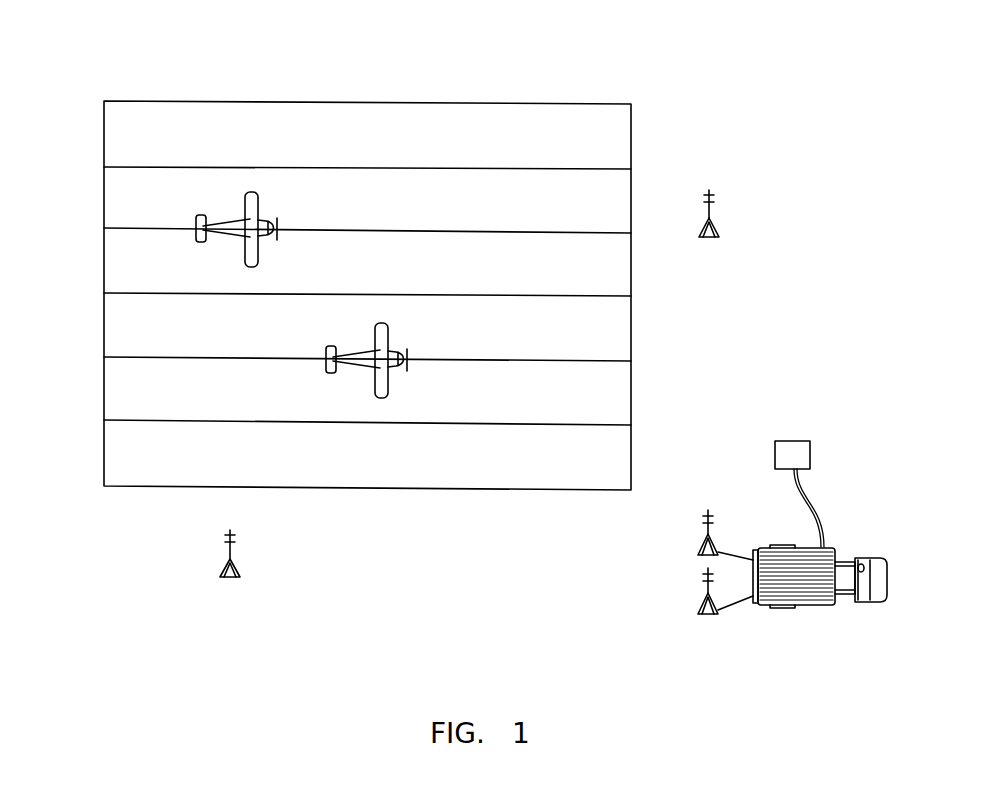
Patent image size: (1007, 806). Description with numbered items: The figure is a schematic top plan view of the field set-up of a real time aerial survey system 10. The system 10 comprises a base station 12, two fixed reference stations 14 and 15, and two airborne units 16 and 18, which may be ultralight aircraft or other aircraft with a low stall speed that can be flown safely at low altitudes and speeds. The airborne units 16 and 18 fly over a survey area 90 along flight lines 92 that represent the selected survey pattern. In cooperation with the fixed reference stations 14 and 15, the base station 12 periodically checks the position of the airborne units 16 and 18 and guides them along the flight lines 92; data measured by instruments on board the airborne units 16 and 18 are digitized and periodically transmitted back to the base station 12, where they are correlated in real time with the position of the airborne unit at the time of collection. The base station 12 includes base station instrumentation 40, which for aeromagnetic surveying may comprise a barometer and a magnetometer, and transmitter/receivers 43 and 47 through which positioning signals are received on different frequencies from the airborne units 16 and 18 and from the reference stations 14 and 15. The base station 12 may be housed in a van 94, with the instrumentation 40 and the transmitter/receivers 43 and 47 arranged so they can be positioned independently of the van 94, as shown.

The real time aerial survey system 10 is at (340, 58).
The survey area 90 is at (180, 100).
The flight lines 92 is at (104, 228).
The airborne unit 16 is at (239, 227).
The airborne unit 18 is at (366, 357).
The reference station 15 is at (713, 226).
The reference station 14 is at (222, 565).
The base station instrumentation 40 is at (787, 441).
The transmitter/receiver 47 is at (698, 549).
The transmitter/receiver 43 is at (698, 611).
The base station 12 is at (834, 622).
The van 94 is at (877, 557).